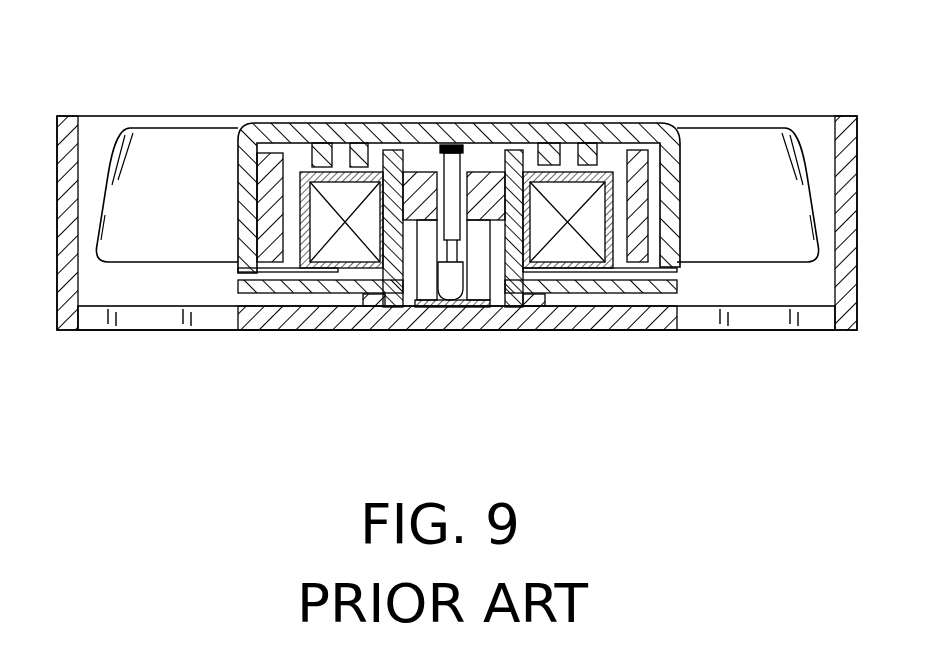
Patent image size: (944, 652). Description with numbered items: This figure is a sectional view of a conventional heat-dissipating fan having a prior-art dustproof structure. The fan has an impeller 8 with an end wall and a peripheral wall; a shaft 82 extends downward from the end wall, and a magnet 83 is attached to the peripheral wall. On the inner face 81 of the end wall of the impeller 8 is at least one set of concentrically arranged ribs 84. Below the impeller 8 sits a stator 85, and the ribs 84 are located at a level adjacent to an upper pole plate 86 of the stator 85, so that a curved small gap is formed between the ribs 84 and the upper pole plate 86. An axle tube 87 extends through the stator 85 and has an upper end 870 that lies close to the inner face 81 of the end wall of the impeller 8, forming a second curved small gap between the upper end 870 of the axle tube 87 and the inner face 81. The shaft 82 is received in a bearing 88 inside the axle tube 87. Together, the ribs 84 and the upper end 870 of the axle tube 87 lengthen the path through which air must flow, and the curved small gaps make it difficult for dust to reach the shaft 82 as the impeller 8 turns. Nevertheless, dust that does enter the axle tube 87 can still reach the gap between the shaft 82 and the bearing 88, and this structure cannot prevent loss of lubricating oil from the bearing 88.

The impeller 8 is at (693, 153).
The inner face 81 is at (620, 143).
The shaft 82 is at (466, 150).
The magnet 83 is at (663, 153).
The ribs 84 is at (355, 165).
The stator 85 is at (338, 252).
The upper pole plate 86 is at (643, 273).
The axle tube 87 is at (528, 235).
The bearing 88 is at (473, 300).
The upper end 870 is at (513, 150).